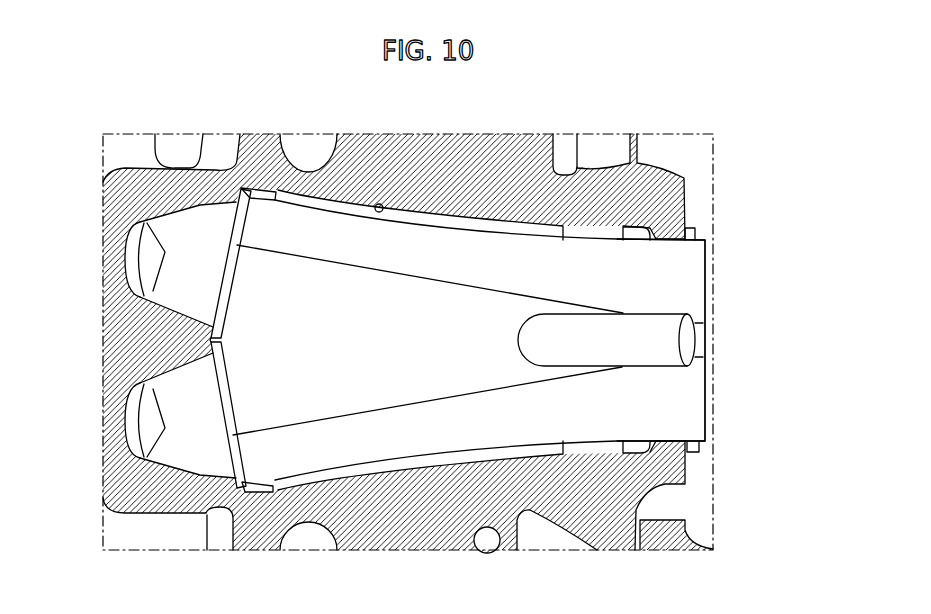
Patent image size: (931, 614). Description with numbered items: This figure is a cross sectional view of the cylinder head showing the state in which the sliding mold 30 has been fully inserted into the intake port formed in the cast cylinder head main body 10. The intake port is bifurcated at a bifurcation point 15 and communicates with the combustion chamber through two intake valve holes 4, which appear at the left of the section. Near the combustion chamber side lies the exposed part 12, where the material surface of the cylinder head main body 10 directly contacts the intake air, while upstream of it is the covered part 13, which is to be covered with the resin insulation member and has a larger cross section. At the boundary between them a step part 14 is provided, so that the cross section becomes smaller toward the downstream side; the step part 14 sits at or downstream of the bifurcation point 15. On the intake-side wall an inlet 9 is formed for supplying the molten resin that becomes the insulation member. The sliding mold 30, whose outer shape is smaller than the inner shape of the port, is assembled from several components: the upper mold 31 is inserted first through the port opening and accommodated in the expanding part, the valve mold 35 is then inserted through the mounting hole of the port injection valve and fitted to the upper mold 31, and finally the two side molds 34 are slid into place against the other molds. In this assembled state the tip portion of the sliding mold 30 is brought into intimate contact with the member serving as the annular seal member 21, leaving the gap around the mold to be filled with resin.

The cylinder head main body 10 is at (96, 172).
The intake valve hole 4 is at (143, 242).
The exposed part 12 is at (170, 279).
The bifurcation point 15 is at (209, 340).
The covered part 13 is at (379, 204).
The inlet 9 is at (573, 226).
The sliding mold 30 is at (432, 348).
The upper mold 31 is at (411, 348).
The seal member 21 is at (210, 480).
The step part 14 is at (247, 493).
The side mold 34 is at (690, 265).
The valve mold 35 is at (690, 340).